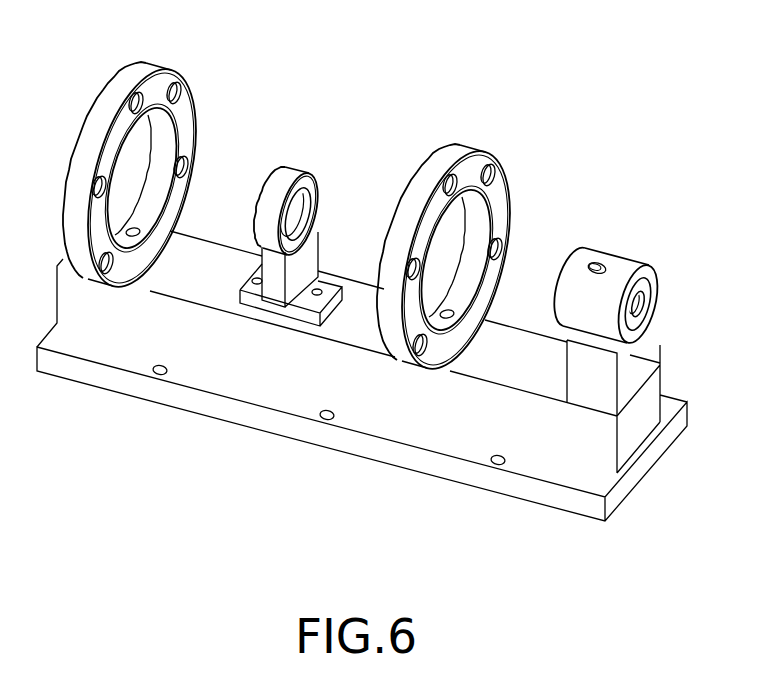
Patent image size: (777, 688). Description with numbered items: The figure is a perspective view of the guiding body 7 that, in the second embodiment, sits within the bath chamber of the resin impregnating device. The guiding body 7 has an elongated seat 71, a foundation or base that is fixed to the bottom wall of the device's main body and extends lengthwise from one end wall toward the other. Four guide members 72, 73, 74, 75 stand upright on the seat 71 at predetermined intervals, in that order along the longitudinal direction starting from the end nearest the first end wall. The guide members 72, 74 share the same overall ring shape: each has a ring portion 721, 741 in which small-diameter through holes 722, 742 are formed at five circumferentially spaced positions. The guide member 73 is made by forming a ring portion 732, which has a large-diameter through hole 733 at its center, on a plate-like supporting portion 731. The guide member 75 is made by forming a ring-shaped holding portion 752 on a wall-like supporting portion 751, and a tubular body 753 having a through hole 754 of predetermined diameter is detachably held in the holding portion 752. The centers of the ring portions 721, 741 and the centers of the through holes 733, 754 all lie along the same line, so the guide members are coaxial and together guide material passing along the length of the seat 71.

The guiding body 7 is at (116, 414).
The seat 71 is at (368, 425).
The guide member 72 is at (130, 62).
The ring portion 721 is at (198, 111).
The small-diameter through holes 722 is at (98, 183).
The guide member 73 is at (286, 182).
The plate-like supporting portion 731 is at (300, 277).
The ring portion 732 is at (306, 190).
The large-diameter through hole 733 is at (298, 217).
The guide member 74 is at (450, 157).
The ring portion 741 is at (500, 205).
The small-diameter through holes 742 is at (408, 270).
The guide member 75 is at (612, 260).
The wall-like supporting portion 751 is at (600, 373).
The holding portion 752 is at (580, 268).
The tubular body 753 is at (637, 283).
The through hole 754 is at (640, 310).